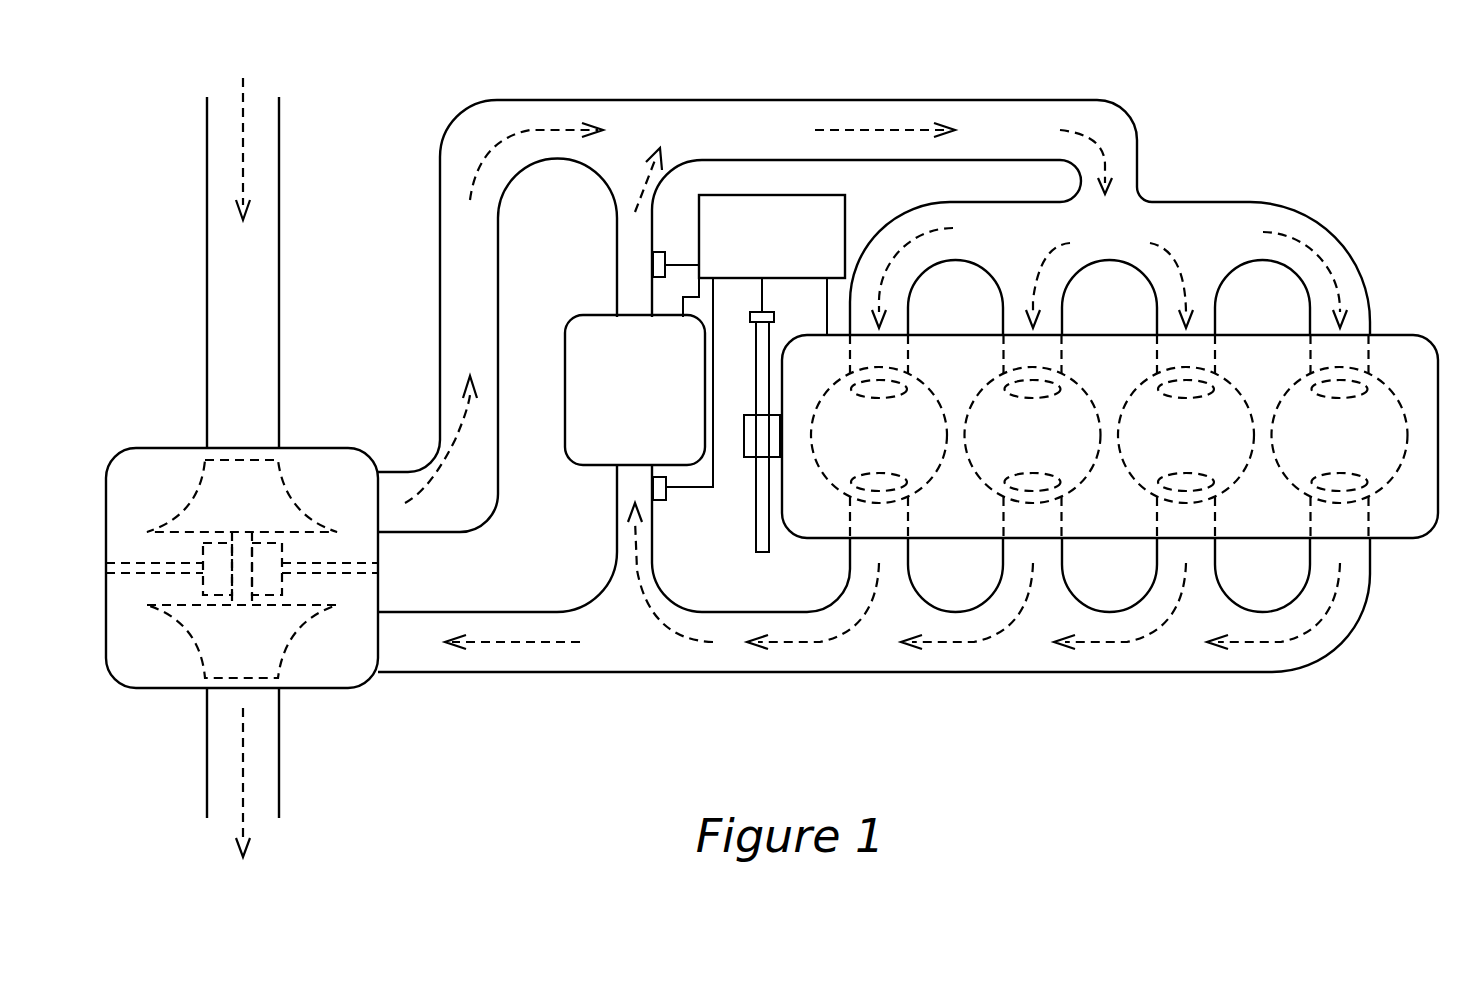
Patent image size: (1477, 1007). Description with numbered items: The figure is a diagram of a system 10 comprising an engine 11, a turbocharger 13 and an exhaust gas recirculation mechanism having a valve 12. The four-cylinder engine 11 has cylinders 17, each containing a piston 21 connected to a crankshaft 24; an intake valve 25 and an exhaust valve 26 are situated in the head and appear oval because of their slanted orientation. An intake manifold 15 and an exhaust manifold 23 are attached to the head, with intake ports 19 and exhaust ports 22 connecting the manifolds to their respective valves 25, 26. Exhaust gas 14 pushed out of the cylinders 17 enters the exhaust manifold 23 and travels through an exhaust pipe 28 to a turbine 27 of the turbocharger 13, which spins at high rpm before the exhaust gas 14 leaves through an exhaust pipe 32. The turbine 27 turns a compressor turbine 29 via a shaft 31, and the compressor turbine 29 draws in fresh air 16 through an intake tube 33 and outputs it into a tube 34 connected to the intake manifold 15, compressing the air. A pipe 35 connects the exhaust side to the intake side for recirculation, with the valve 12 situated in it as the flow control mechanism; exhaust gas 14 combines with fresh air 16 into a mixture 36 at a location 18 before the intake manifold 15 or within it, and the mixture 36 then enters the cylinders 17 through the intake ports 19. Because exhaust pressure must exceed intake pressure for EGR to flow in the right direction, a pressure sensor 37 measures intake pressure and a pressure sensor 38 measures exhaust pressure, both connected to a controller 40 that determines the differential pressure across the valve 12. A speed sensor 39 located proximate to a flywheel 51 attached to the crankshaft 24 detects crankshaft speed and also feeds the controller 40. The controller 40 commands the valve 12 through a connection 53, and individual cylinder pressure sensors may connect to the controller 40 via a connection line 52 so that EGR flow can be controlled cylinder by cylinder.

The system 10 is at (1208, 110).
The engine 11 is at (1397, 335).
The valve 12 is at (565, 388).
The turbocharger 13 is at (318, 450).
The exhaust gas 14 is at (243, 808).
The intake manifold 15 is at (1238, 202).
The fresh air 16 is at (243, 95).
The cylinder 17 is at (831, 383).
The location 18 is at (676, 143).
The intake port 19 is at (906, 352).
The piston 21 is at (864, 452).
The exhaust port 22 is at (907, 517).
The exhaust manifold 23 is at (985, 672).
The crankshaft 24 is at (744, 458).
The intake valve 25 is at (893, 400).
The exhaust valve 26 is at (862, 472).
The turbine 27 is at (272, 645).
The exhaust pipe 28 is at (565, 672).
The compressor turbine 29 is at (272, 500).
The shaft 31 is at (240, 555).
The exhaust pipe 32 is at (279, 752).
The intake tube 33 is at (279, 272).
The tube 34 is at (440, 296).
The pipe 35 is at (652, 265).
The mixture 36 is at (885, 118).
The pressure sensor 37 is at (655, 250).
The pressure sensor 38 is at (660, 500).
The speed sensor 39 is at (757, 312).
The controller 40 is at (783, 196).
The flywheel 51 is at (769, 552).
The connection line 52 is at (827, 308).
The connection 53 is at (690, 297).